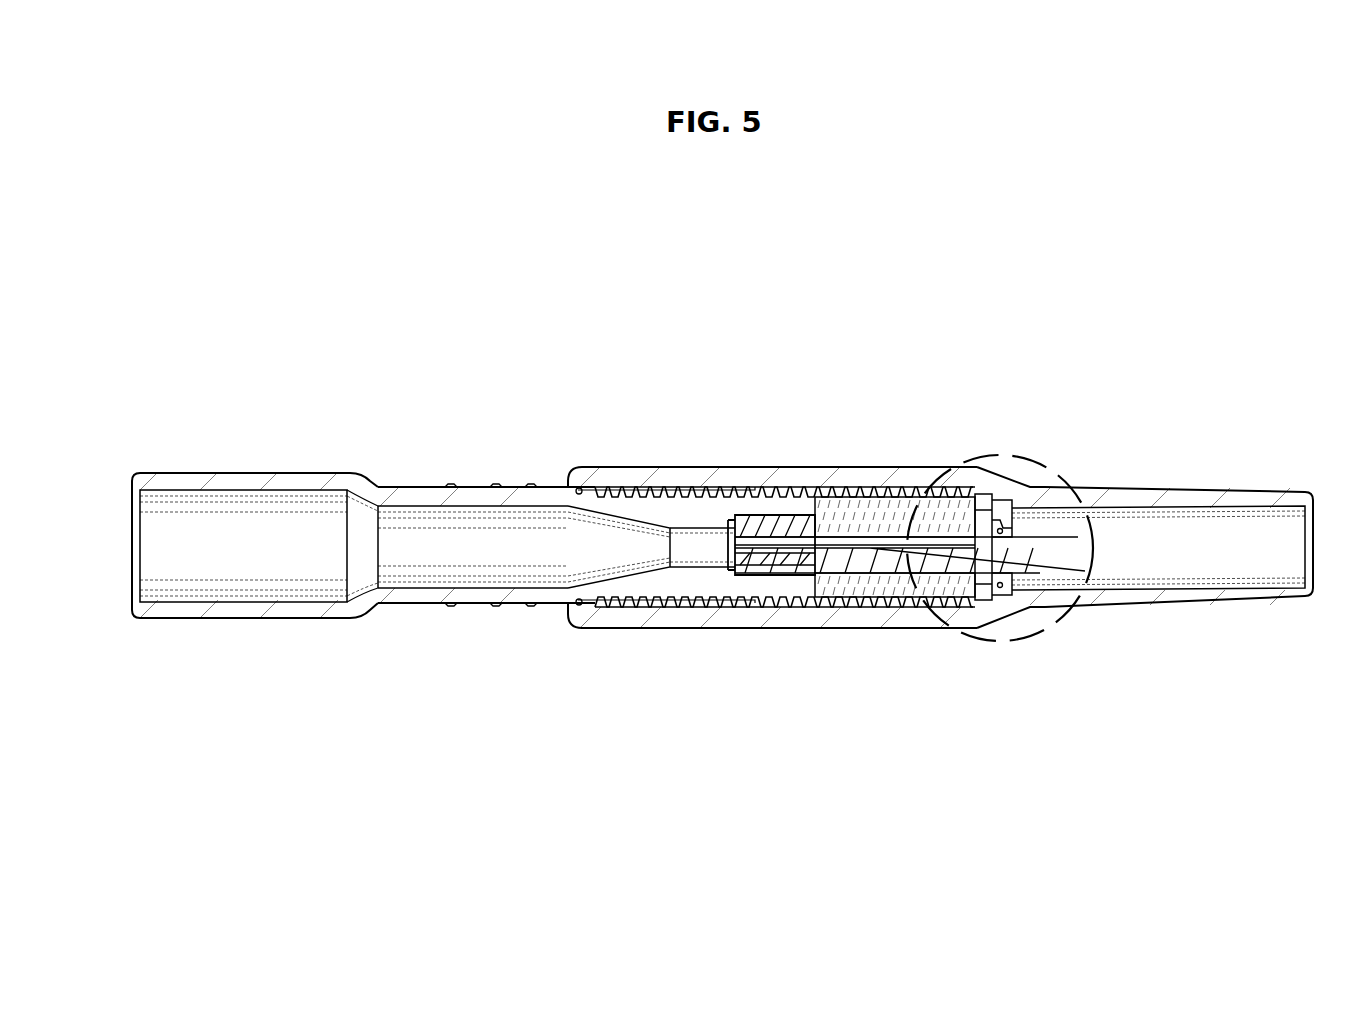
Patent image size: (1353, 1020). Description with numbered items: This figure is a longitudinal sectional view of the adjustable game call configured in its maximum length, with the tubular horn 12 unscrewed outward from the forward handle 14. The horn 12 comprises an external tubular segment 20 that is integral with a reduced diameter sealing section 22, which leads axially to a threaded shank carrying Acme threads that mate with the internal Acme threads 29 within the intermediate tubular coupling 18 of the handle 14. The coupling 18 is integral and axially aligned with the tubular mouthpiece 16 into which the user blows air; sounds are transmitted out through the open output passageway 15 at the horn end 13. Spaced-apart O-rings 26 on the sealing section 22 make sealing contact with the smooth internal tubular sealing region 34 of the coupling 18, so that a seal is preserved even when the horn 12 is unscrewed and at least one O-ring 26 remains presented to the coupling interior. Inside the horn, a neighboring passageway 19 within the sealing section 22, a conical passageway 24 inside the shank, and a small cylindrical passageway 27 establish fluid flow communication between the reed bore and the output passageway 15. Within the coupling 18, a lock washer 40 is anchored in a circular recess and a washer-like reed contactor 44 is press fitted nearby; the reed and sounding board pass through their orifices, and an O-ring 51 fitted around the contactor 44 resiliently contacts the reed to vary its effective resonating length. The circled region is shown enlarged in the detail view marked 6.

The detail section line 6 is at (1073, 613).
The tubular horn 12 is at (215, 637).
The end 13 is at (132, 476).
The forward handle 14 is at (1105, 457).
The output passageway 15 is at (243, 546).
The tubular mouthpiece 16 is at (1148, 466).
The intermediate tubular coupling 18 is at (892, 475).
The passageway 19 is at (425, 578).
The external tubular segment 20 is at (236, 478).
The sealing section 22 is at (550, 462).
The conical passageway 24 is at (625, 548).
The O-rings 26 is at (578, 612).
The small cylindrical passageway 27 is at (700, 556).
The internal Acme threads 29 is at (868, 518).
The internal tubular sealing region 34 is at (645, 508).
The lock washer 40 is at (980, 598).
The reed contactor 44 is at (1025, 592).
The O-ring 51 is at (1003, 598).